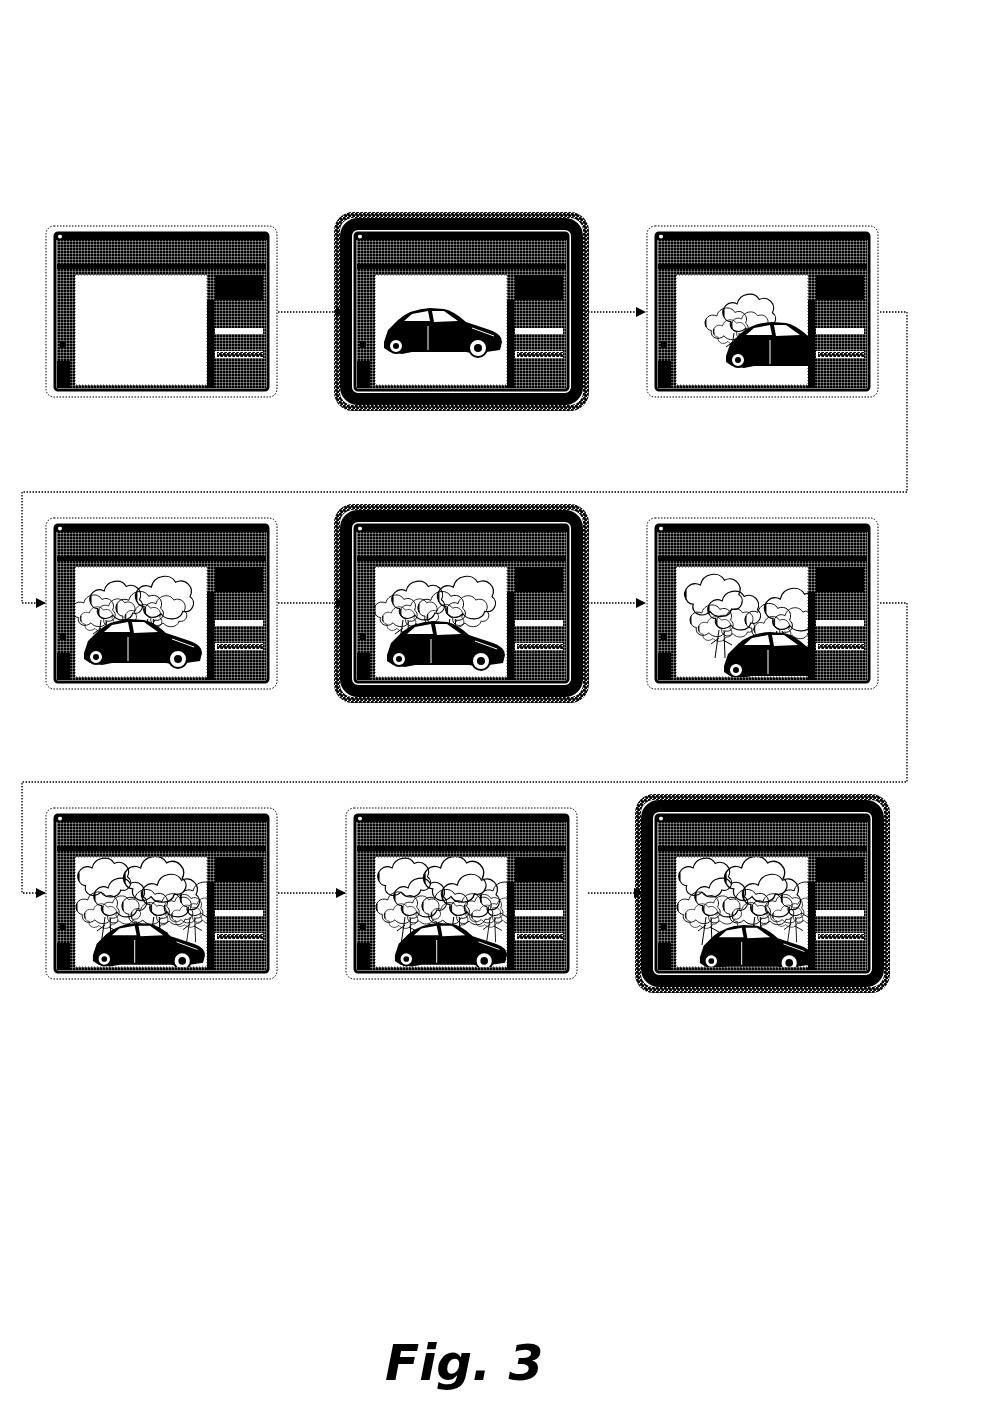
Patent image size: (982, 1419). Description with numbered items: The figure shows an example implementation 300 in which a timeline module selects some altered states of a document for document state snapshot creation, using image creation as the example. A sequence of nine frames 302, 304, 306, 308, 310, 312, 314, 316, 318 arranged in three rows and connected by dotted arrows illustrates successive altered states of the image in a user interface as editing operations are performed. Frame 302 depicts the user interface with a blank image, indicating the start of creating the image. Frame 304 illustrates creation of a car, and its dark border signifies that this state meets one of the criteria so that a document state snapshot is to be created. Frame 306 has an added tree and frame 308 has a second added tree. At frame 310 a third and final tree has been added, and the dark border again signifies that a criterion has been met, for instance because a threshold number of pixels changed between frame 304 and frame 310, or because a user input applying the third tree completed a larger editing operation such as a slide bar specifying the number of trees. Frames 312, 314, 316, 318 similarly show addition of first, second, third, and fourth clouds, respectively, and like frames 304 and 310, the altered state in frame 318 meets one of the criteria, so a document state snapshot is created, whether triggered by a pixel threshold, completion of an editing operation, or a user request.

The example implementation 300 is at (814, 42).
The frame depicting blank image 302 is at (161, 338).
The frame illustrating creation of a car 304 is at (461, 333).
The frame with added tree 306 is at (762, 338).
The frame with second added tree 308 is at (161, 630).
The frame with third and final tree 310 is at (461, 625).
The frame with first cloud 312 is at (762, 630).
The frame with second cloud 314 is at (161, 921).
The frame with third cloud 316 is at (461, 921).
The frame with fourth cloud 318 is at (762, 915).